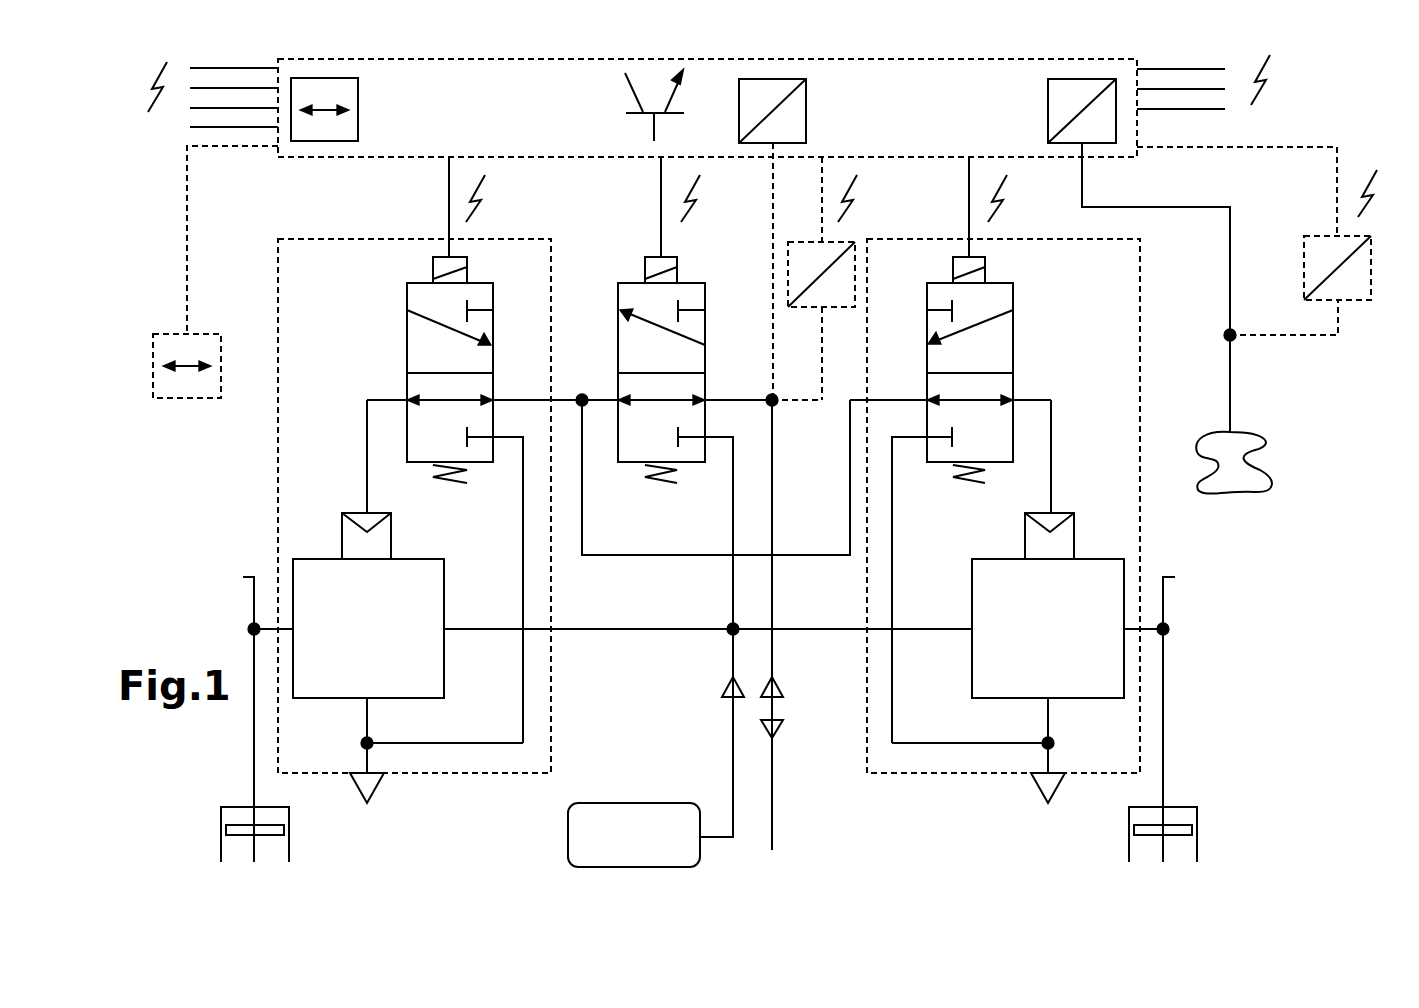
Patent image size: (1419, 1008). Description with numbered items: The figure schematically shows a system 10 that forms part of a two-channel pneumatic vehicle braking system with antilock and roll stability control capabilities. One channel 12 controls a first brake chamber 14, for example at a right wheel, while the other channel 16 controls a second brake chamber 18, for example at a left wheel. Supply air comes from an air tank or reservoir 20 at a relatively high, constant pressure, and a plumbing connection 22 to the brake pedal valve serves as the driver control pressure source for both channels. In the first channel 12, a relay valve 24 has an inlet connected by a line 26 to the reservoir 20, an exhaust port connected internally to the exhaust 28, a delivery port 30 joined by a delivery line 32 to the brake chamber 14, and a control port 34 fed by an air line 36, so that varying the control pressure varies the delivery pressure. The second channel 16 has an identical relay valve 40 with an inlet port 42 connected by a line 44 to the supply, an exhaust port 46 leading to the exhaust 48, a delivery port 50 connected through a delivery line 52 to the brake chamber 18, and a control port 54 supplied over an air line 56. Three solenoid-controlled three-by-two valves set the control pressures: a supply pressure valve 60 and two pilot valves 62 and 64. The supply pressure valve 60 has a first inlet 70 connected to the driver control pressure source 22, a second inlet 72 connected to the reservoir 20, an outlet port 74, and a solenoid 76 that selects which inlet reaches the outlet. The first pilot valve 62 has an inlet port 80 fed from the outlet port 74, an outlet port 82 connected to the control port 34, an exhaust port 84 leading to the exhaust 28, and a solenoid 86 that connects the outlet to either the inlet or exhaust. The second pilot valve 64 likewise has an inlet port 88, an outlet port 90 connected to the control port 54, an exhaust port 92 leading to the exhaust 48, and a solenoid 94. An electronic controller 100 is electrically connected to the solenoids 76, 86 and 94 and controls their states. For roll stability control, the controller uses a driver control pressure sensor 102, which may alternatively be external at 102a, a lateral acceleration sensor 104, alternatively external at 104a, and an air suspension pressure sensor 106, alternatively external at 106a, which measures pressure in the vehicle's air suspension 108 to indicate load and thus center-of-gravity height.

The system 10 is at (566, 894).
The first channel 12 is at (922, 800).
The first brake chamber 14 is at (1200, 817).
The second channel 16 is at (486, 790).
The second brake chamber 18 is at (221, 815).
The air tank or reservoir 20 is at (633, 822).
The plumbing connection 22 is at (773, 827).
The relay valve 24 is at (1048, 628).
The line 26 is at (928, 629).
The exhaust 28 is at (1030, 786).
The delivery port 30 is at (1170, 627).
The delivery line 32 is at (1165, 737).
The control port 34 is at (1075, 540).
The air line 36 is at (1052, 467).
The relay valve 40 is at (368, 628).
The inlet port 42 is at (444, 629).
The line 44 is at (625, 632).
The exhaust port 46 is at (370, 743).
The exhaust 48 is at (370, 790).
The delivery port 50 is at (252, 625).
The delivery line 52 is at (254, 727).
The control port 54 is at (391, 537).
The air line 56 is at (367, 473).
The supply pressure valve 60 is at (672, 342).
The first pilot valve 62 is at (976, 366).
The second pilot valve 64 is at (448, 366).
The first inlet 70 is at (705, 400).
The second inlet 72 is at (705, 437).
The outlet port 74 is at (618, 400).
The solenoid 76 is at (680, 262).
The inlet port 80 is at (927, 400).
The outlet port 82 is at (1013, 400).
The exhaust port 84 is at (927, 437).
The solenoid 86 is at (985, 272).
The inlet port 88 is at (493, 400).
The outlet port 90 is at (407, 400).
The exhaust port 92 is at (493, 437).
The solenoid 94 is at (433, 275).
The electronic controller 100 is at (858, 52).
The driver control pressure sensor 102 is at (806, 117).
The driver control pressure sensor 102a is at (858, 239).
The lateral acceleration sensor 104 is at (358, 110).
The lateral acceleration sensor 104a is at (160, 348).
The air suspension pressure sensor 106 is at (1090, 79).
The air suspension pressure sensor 106a is at (1355, 285).
The air suspension 108 is at (1255, 475).